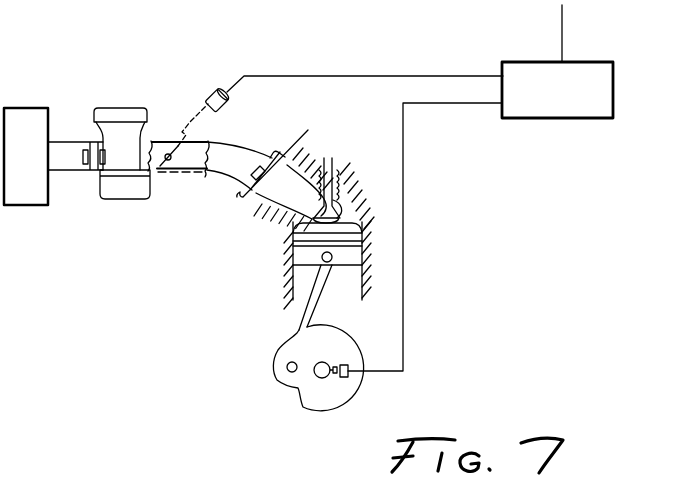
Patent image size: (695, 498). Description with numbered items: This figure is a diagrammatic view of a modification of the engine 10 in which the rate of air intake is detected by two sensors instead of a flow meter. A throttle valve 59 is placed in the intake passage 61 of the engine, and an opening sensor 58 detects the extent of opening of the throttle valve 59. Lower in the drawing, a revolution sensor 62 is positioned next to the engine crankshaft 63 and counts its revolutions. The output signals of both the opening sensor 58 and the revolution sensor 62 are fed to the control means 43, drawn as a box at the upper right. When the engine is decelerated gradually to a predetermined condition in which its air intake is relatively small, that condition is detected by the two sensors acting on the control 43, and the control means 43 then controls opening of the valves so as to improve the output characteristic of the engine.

The engine 10 is at (1, 49).
The control means 43 is at (571, 107).
The opening sensor 58 is at (215, 89).
The throttle valve 59 is at (165, 150).
The intake passage 61 is at (195, 158).
The revolution sensor 62 is at (350, 377).
The engine crankshaft 63 is at (322, 370).